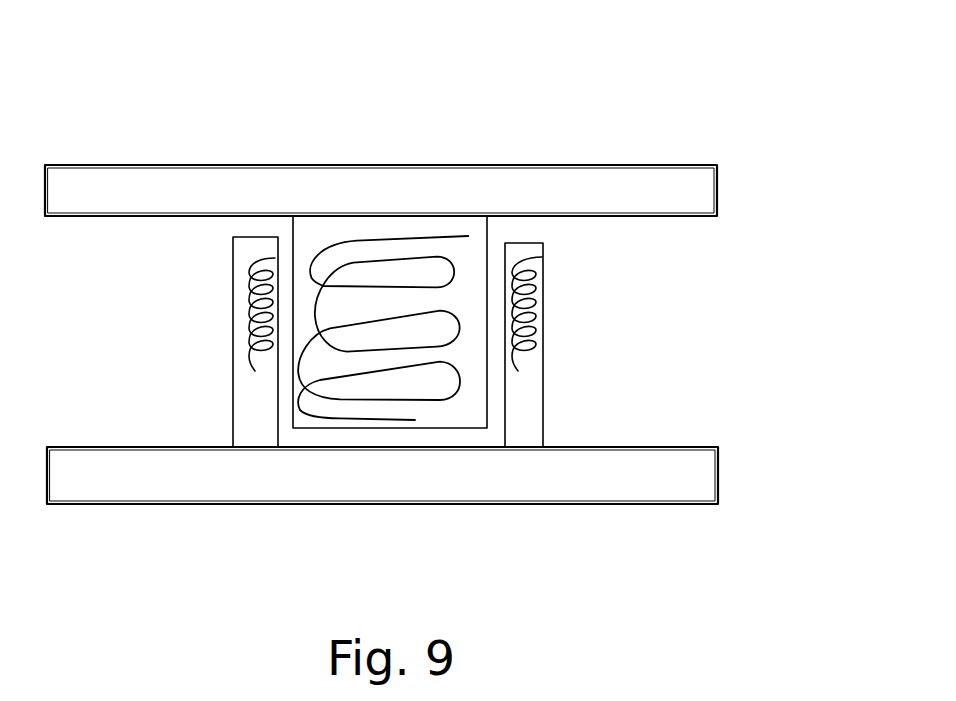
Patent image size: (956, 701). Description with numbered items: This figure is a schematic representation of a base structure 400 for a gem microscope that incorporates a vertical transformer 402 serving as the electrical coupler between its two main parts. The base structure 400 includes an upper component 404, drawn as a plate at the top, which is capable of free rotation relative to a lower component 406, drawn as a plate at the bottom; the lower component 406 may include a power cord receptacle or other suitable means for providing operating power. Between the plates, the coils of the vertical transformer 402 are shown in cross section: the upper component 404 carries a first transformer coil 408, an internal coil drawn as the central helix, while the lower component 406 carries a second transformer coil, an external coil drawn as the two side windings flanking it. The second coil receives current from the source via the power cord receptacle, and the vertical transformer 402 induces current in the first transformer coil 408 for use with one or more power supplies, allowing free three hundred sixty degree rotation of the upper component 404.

The base structure 400 is at (398, 43).
The vertical transformer 402 is at (186, 267).
The upper component 404 is at (117, 165).
The lower component 406 is at (173, 506).
The first transformer coil 408 is at (486, 343).